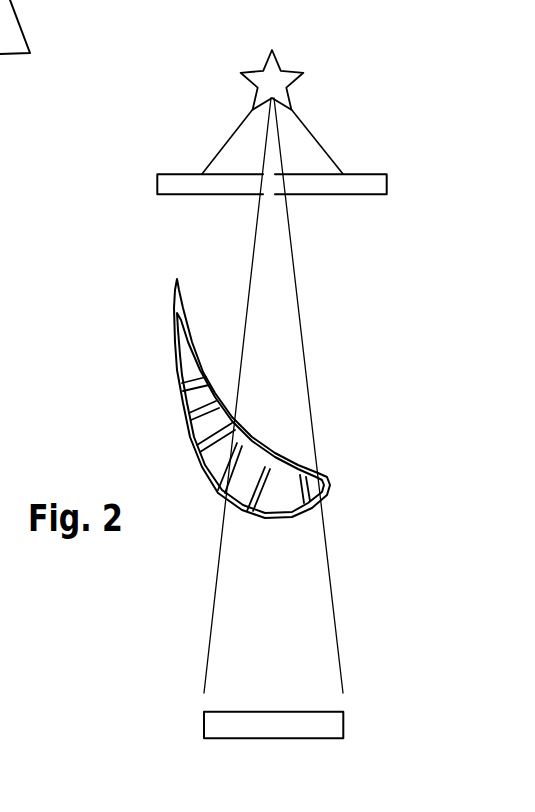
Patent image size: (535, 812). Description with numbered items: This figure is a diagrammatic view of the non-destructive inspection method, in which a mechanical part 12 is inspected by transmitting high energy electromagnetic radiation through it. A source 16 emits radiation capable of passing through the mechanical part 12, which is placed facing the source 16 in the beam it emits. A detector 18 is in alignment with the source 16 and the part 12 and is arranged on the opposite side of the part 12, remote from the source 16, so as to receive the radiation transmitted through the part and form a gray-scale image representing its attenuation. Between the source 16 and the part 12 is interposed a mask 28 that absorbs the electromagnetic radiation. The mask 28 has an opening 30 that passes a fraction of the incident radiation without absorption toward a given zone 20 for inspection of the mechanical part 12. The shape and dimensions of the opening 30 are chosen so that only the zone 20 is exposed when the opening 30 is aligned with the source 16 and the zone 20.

The mechanical part 12 is at (173, 388).
The source 16 is at (289, 73).
The detector 18 is at (204, 726).
The given zone 20 is at (262, 451).
The mask 28 is at (362, 174).
The opening 30 is at (272, 186).